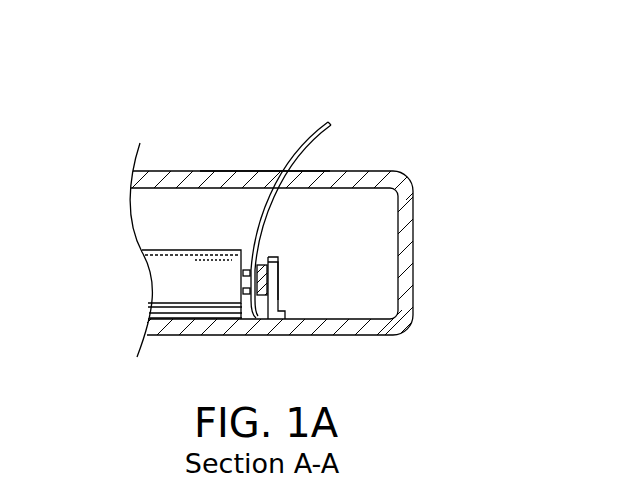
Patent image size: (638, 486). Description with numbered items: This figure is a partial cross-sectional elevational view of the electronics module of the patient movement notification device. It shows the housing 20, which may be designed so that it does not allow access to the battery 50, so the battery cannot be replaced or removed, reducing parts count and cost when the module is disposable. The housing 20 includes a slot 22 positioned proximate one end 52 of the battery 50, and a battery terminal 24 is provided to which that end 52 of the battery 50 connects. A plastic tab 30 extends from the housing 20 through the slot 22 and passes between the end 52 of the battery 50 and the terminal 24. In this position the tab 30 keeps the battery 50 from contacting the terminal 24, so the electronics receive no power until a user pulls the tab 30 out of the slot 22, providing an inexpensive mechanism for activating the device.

The housing 20 is at (412, 169).
The slot 22 is at (275, 167).
The battery terminal 24 is at (268, 270).
The plastic tab 30 is at (312, 132).
The battery 50 is at (198, 297).
The end of battery 52 is at (250, 312).